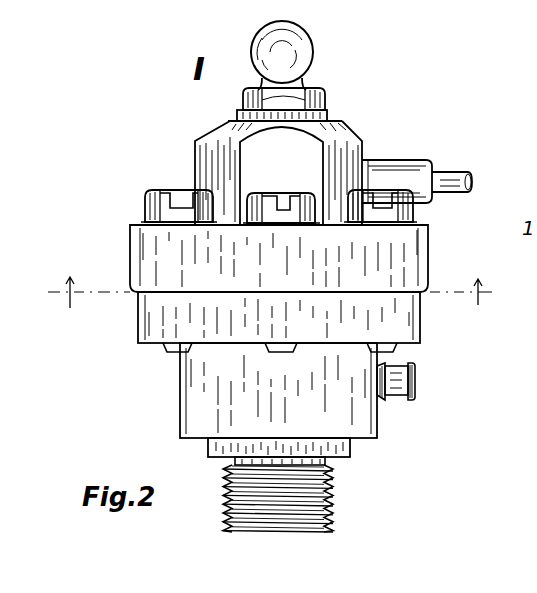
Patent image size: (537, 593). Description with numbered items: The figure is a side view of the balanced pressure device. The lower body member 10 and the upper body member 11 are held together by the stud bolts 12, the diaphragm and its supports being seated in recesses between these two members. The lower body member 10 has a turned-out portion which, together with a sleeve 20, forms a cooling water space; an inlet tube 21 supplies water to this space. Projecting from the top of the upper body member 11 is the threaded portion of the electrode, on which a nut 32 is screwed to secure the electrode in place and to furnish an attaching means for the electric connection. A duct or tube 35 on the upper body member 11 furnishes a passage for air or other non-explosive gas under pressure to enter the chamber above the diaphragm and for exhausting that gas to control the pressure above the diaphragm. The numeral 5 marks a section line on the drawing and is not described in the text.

The section line 5- 5 is at (271, 292).
The lower body member 10 is at (420, 316).
The upper body member 11 is at (428, 266).
The stud bolts 12 is at (145, 200).
The sleeve 20 is at (395, 432).
The inlet tube 21 is at (415, 378).
The nut 32 is at (312, 47).
The duct or tube 35 is at (436, 172).